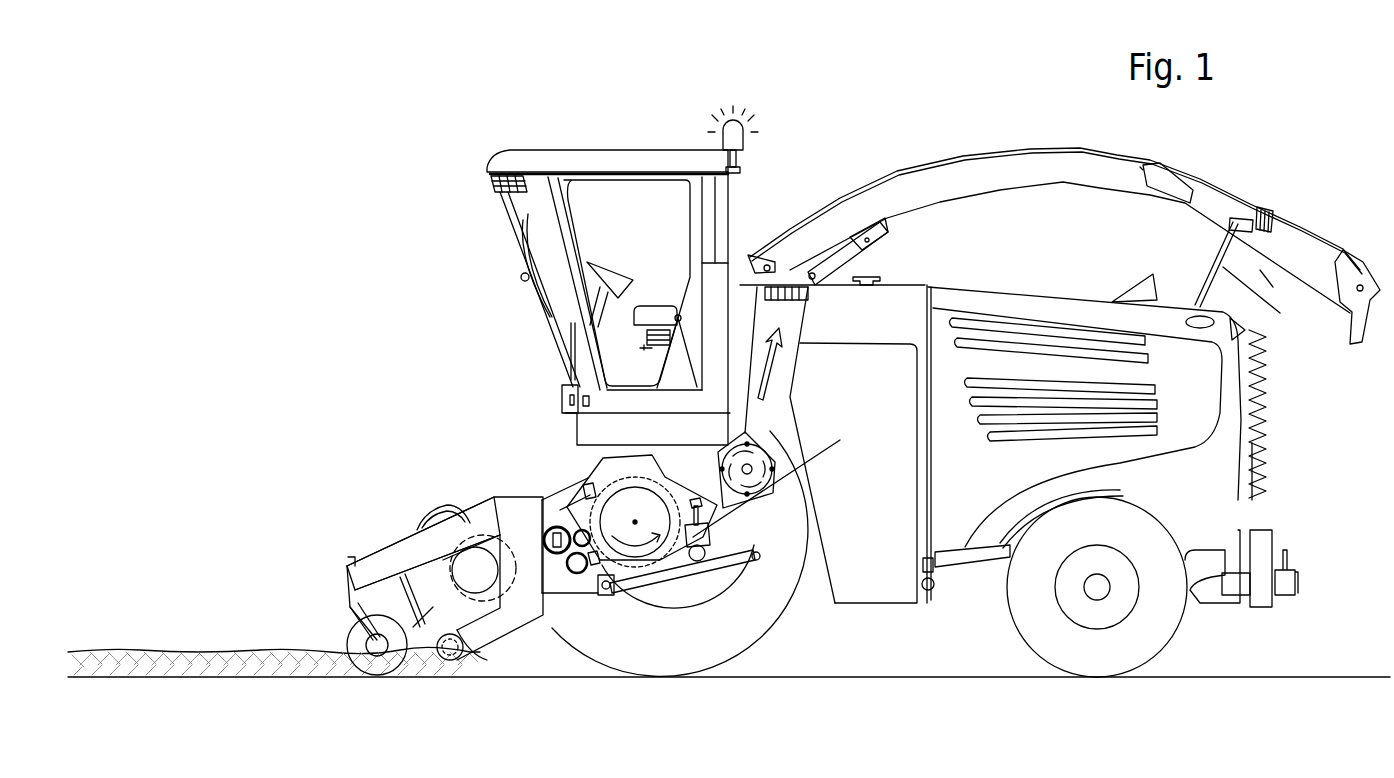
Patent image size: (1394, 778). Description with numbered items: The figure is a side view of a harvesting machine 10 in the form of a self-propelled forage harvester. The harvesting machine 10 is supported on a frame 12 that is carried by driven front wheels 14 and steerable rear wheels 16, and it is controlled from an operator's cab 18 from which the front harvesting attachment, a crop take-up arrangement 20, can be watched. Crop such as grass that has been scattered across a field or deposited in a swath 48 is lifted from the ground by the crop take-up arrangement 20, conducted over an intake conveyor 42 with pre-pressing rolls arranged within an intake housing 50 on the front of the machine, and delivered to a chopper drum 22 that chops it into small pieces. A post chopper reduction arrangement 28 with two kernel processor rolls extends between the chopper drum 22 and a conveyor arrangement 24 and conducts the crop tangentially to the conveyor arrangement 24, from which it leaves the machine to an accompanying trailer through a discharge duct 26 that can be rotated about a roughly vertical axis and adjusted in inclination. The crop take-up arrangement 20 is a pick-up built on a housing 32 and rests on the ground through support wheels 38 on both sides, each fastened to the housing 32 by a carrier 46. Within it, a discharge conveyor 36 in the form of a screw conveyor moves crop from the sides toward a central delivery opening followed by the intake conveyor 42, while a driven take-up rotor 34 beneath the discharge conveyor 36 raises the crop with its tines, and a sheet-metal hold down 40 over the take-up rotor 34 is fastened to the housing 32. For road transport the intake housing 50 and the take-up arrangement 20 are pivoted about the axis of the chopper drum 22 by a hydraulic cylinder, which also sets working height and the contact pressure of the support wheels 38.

The harvesting machine 10 is at (300, 316).
The frame 12 is at (957, 560).
The front wheels 14 is at (637, 655).
The rear wheels 16 is at (1152, 632).
The operator's cab 18 is at (545, 247).
The crop take-up arrangement 20 is at (357, 512).
The chopper drum 22 is at (643, 563).
The conveyor arrangement 24 is at (748, 492).
The discharge duct 26 is at (1037, 170).
The post chopper reduction arrangement 28 is at (707, 532).
The housing 32 is at (508, 617).
The take-up rotor 34 is at (457, 647).
The discharge conveyor 36 is at (457, 580).
The support wheels 38 is at (365, 660).
The hold down 40 is at (410, 627).
The intake conveyor 42 is at (560, 515).
The carrier 46 is at (362, 572).
The swath 48 is at (153, 650).
The intake housing 50 is at (558, 598).